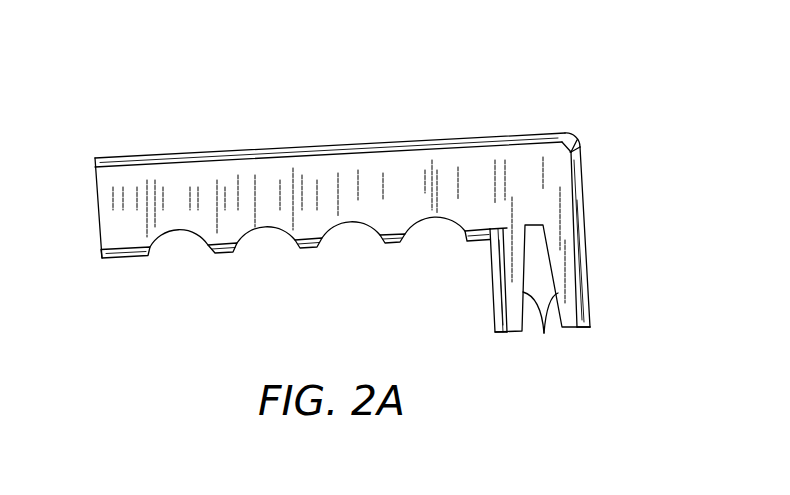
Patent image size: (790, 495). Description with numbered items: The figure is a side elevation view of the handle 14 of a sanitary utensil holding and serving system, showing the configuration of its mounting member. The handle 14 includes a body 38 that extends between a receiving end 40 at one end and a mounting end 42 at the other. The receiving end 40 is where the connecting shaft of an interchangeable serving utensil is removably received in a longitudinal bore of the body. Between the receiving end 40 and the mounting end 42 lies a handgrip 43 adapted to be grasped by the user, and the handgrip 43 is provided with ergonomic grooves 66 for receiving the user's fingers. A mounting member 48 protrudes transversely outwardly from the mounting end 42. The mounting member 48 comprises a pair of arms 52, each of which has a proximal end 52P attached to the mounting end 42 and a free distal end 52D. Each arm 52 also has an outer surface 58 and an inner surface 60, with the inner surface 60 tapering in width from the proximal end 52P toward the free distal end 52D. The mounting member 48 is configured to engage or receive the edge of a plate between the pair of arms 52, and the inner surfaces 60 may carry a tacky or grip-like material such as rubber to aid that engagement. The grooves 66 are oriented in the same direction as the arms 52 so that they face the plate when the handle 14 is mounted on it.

The handle 14 is at (347, 219).
The body 38 is at (338, 144).
The receiving end 40 is at (96, 194).
The mounting end 42 is at (582, 167).
The handgrip 43 is at (308, 249).
The mounting member 48 is at (529, 278).
The arms 52 is at (529, 258).
The proximal end 52P is at (488, 252).
The free distal end 52D is at (503, 332).
The outer surface 58 is at (490, 272).
The inner surface 60 is at (540, 327).
The ergonomic grooves 66 is at (266, 232).